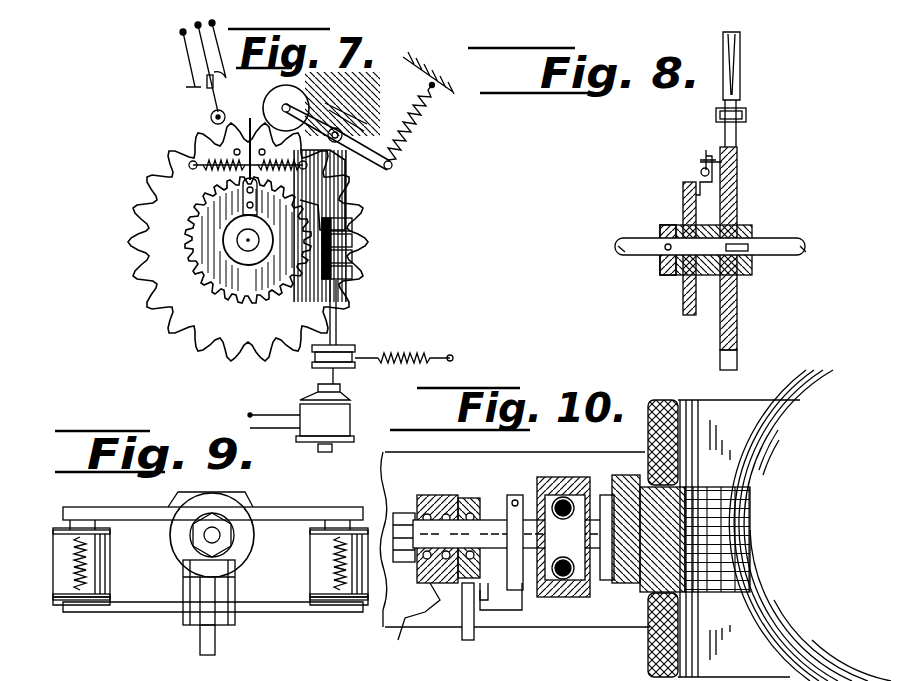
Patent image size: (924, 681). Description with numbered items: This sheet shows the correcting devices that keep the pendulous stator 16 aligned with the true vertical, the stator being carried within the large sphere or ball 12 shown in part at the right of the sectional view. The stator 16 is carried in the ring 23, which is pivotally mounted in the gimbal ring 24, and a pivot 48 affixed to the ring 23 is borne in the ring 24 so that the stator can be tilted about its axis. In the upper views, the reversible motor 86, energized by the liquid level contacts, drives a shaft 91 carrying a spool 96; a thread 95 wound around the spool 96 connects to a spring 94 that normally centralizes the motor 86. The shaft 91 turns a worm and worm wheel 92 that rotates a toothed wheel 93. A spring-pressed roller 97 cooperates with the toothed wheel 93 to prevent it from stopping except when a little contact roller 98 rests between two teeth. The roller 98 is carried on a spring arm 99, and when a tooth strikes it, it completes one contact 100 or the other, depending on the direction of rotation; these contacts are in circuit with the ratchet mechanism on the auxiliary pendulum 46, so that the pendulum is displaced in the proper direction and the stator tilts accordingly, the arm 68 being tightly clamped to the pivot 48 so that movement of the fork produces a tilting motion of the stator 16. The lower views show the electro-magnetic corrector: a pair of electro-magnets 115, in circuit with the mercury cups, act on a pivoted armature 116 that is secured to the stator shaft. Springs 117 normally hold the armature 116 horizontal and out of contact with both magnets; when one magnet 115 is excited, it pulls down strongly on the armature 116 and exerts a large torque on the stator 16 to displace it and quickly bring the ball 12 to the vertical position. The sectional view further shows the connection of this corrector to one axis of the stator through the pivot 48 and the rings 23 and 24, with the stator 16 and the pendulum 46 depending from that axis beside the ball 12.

In FIG. 10, the wheel 12 is at (810, 525).
In FIG. 10, the stator 16 is at (720, 538).
In FIG. 10, the ring 23 is at (624, 475).
In FIG. 10, the gimbal ring 24 is at (548, 490).
In FIG. 9, the pendulum 46 is at (228, 618).
In FIG. 10, the pendulum 46 is at (432, 567).
In FIG. 10, the pivot 48 is at (603, 560).
In FIG. 9, the arm 68 is at (204, 642).
In FIG. 10, the arm 68 is at (462, 632).
In FIG. 7, the reversible motor 86 is at (330, 440).
In FIG. 7, the shaft 91 is at (341, 332).
In FIG. 7, the worm 92 is at (354, 246).
In FIG. 7, the toothed wheel 93 is at (160, 305).
In FIG. 8, the toothed wheel 93 is at (740, 296).
In FIG. 7, the spring 94 is at (422, 358).
In FIG. 7, the thread 95 is at (366, 358).
In FIG. 7, the spool 96 is at (345, 368).
In FIG. 7, the spring-pressed roller 97 is at (316, 85).
In FIG. 7, the contact roller 98 is at (211, 117).
In FIG. 8, the contact roller 98 is at (747, 118).
In FIG. 7, the spring arm 99 is at (181, 36).
In FIG. 7, the contact 100 is at (200, 88).
In FIG. 9, the electro-magnet 115 is at (106, 560).
In FIG. 10, the electro-magnet 115 is at (520, 600).
In FIG. 9, the pivoted armature 116 is at (256, 506).
In FIG. 10, the pivoted armature 116 is at (512, 500).
In FIG. 9, the spring 117 is at (85, 590).